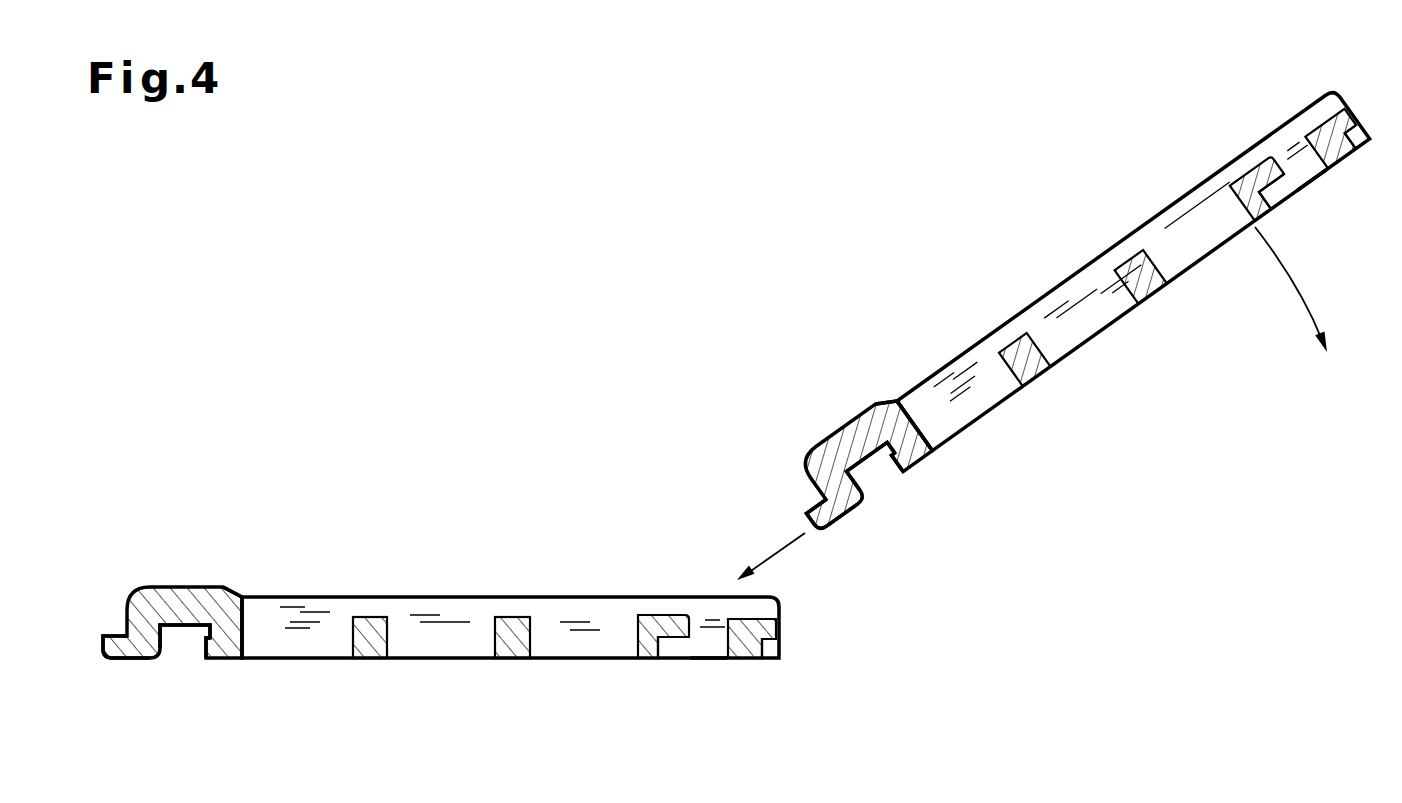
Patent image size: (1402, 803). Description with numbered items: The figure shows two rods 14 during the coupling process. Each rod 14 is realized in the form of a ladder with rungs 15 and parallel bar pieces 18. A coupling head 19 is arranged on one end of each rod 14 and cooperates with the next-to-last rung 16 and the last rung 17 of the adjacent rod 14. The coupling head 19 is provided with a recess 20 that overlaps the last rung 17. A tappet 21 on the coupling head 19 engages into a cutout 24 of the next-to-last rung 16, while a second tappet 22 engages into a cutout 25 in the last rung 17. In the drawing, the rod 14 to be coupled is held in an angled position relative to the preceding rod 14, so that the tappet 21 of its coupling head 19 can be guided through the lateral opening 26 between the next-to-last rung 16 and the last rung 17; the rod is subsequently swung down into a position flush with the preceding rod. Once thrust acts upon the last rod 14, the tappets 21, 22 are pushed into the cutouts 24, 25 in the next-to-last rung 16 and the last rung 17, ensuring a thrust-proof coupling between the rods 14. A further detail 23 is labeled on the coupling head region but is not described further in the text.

The rod 14 is at (340, 602).
The rung 15 is at (385, 658).
The next-to-last rung 16 is at (648, 620).
The last rung 17 is at (747, 620).
The parallel bar piece 18 is at (575, 622).
The coupling head 19 is at (170, 597).
The recess 20 is at (183, 640).
The tappet 21 is at (127, 663).
The tappet 22 is at (213, 653).
The shoulder 23 is at (210, 630).
The cutout 24 is at (670, 647).
The cutout 25 is at (768, 645).
The lateral opening 26 is at (710, 633).